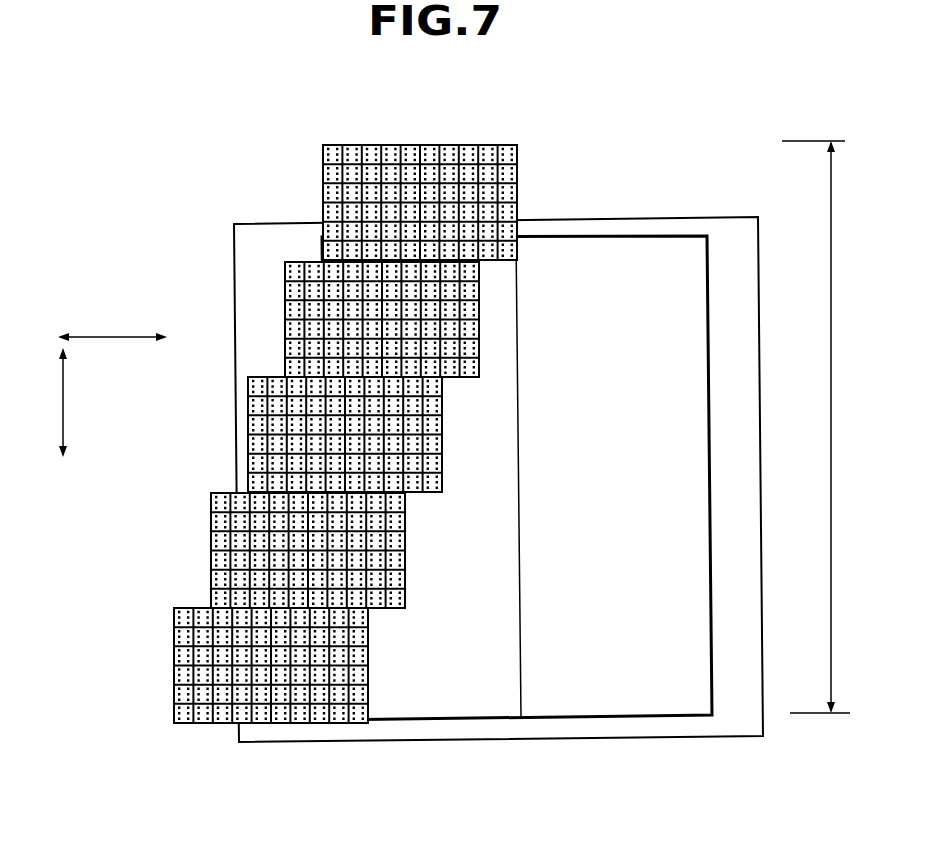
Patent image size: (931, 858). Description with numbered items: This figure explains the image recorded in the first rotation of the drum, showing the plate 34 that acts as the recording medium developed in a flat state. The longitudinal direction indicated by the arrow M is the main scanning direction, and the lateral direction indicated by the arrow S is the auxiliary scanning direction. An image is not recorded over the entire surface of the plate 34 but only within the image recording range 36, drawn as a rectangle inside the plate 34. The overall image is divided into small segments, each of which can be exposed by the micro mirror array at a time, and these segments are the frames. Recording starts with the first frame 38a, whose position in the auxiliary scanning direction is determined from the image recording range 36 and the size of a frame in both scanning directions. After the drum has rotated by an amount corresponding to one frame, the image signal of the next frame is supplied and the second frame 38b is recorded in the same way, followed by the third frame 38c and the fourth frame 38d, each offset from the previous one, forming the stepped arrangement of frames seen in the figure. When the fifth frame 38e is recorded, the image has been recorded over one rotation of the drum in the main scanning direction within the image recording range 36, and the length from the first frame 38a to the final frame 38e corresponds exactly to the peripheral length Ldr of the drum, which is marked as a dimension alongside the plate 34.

The plate 34 is at (221, 237).
The image recording range 36 is at (317, 226).
The first frame 38a is at (177, 595).
The second frame 38b is at (215, 480).
The third frame 38c is at (255, 360).
The fourth frame 38d is at (294, 242).
The fifth frame 38e is at (336, 131).
The peripheral length of the drum Ldr is at (816, 427).
The arrow S is at (112, 354).
The arrow M is at (47, 402).